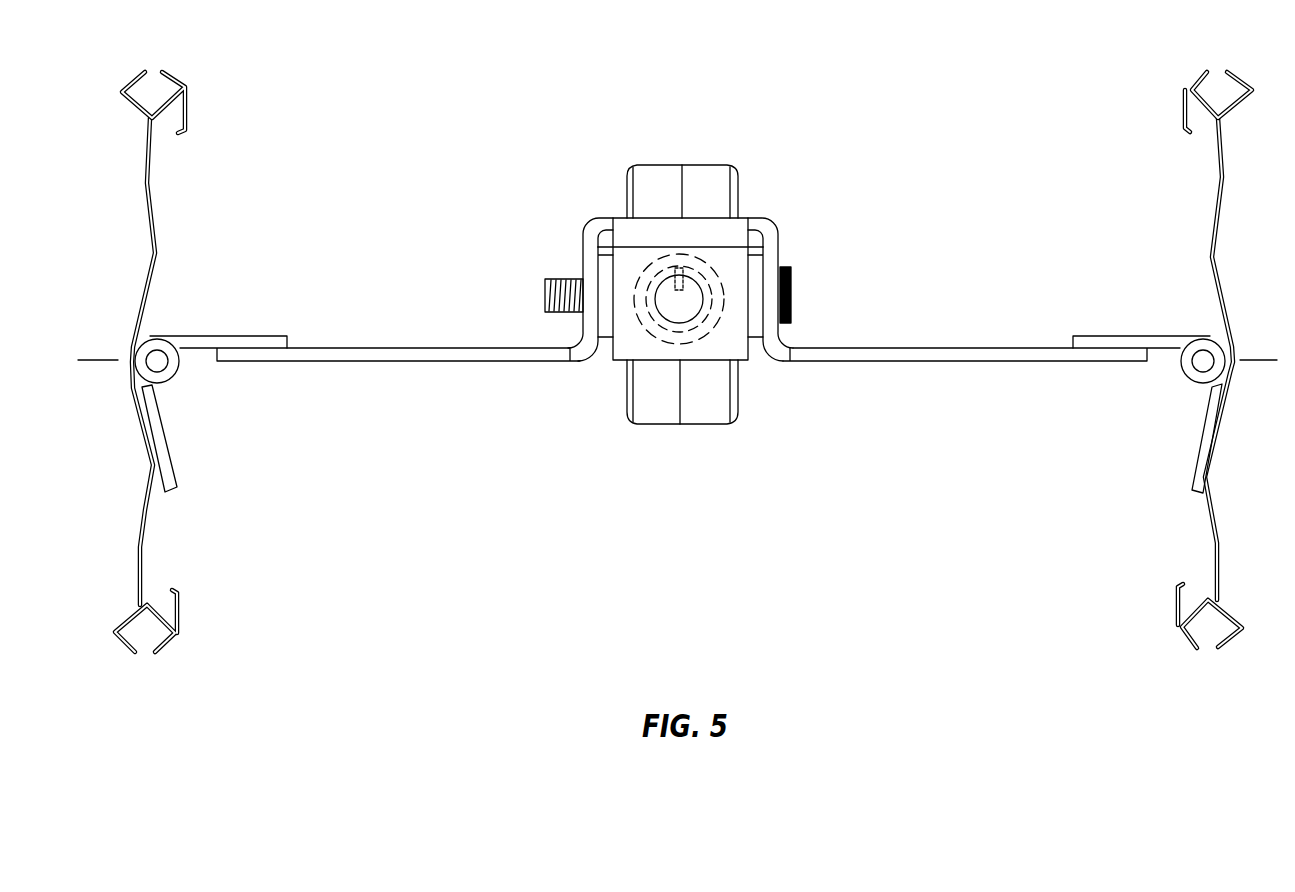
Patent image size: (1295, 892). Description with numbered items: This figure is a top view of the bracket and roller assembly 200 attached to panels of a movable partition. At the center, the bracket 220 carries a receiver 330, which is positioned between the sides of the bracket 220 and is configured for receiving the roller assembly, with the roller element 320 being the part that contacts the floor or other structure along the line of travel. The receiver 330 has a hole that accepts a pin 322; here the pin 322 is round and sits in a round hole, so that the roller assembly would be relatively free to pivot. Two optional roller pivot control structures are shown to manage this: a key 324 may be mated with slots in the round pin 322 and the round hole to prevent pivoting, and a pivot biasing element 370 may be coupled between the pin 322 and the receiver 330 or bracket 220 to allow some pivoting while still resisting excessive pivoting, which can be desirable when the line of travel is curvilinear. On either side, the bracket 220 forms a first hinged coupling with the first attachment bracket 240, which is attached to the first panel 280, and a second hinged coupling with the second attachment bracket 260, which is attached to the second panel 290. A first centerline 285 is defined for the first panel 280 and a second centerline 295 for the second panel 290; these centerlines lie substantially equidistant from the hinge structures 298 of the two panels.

The bracket and roller assembly 200 is at (834, 83).
The bracket 220 is at (902, 345).
The first attachment bracket 240 is at (165, 435).
The second attachment bracket 260 is at (1198, 445).
The first panel 280 is at (150, 185).
The first centerline 285 is at (95, 358).
The second panel 290 is at (1217, 207).
The second centerline 295 is at (1245, 358).
The hinge structures 298 is at (172, 82).
The roller element 320 is at (627, 176).
The pin 322 is at (698, 313).
The key 324 is at (677, 272).
The receiver 330 is at (697, 360).
The pivot biasing element 370 is at (643, 323).